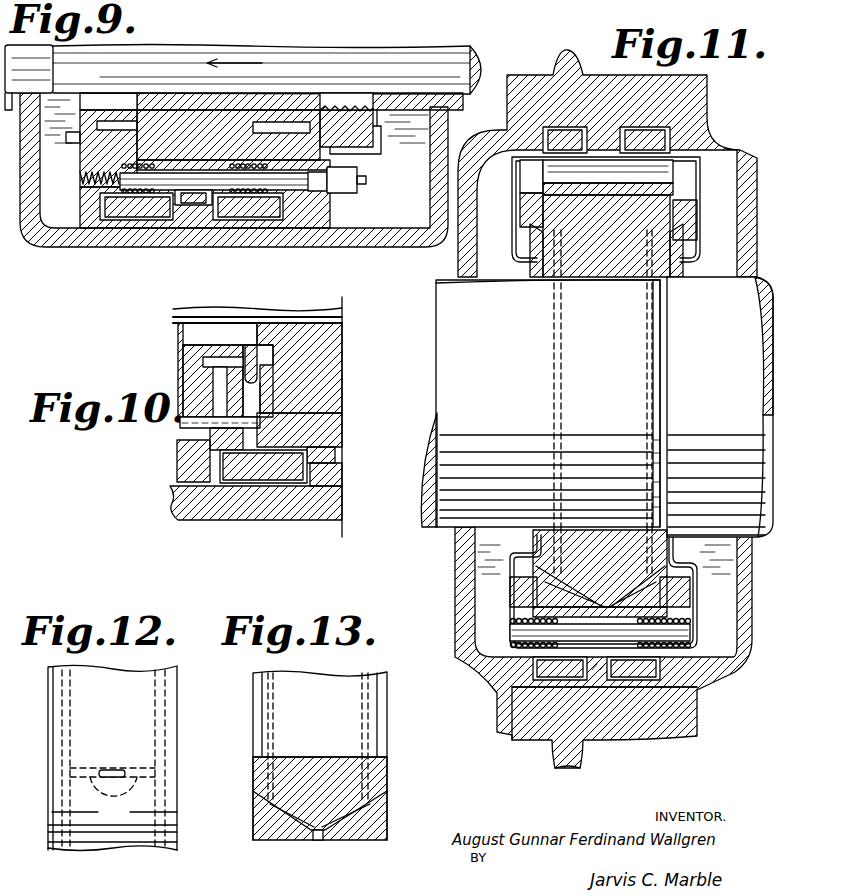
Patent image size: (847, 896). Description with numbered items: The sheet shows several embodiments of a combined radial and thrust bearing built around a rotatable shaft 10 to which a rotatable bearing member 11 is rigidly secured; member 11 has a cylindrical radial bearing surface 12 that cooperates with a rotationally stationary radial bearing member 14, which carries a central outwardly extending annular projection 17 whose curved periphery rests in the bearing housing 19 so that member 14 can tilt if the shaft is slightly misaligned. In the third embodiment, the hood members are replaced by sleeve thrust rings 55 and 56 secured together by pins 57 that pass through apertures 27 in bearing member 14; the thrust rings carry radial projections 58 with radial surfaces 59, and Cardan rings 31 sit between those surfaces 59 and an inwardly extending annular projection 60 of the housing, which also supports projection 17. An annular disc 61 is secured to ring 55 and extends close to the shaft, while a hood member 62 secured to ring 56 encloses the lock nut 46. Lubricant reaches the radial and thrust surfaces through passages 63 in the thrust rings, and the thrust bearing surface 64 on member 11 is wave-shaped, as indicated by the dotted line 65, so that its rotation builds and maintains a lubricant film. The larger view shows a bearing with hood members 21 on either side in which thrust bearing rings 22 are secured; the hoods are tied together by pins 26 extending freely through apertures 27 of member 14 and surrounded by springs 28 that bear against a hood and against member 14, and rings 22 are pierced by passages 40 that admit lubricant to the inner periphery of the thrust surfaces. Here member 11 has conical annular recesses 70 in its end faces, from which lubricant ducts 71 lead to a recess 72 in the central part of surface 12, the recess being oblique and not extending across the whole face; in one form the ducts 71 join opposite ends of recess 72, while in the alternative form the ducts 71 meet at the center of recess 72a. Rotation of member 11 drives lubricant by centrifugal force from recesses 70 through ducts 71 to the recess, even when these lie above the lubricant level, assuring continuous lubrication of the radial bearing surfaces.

In FIG. 10, the rotatable shaft 10 is at (189, 315).
In FIG. 11, the rotatable shaft 10 is at (762, 286).
In FIG. 9, the rotatable bearing member 11 is at (200, 118).
In FIG. 10, the rotatable bearing member 11 is at (334, 370).
In FIG. 11, the rotatable bearing member 11 is at (628, 270).
In FIG. 12, the rotatable bearing member 11 is at (147, 705).
In FIG. 13, the rotatable bearing member 11 is at (377, 777).
In FIG. 11, the cylindrical radial bearing surface 12 is at (607, 193).
In FIG. 9, the radial bearing member 14 is at (217, 162).
In FIG. 10, the radial bearing member 14 is at (337, 433).
In FIG. 11, the radial bearing member 14 is at (672, 184).
In FIG. 9, the annular projection 17 is at (203, 199).
In FIG. 10, the annular projection 17 is at (337, 455).
In FIG. 11, the annular projection 17 is at (603, 128).
In FIG. 11, the bearing housing 19 is at (670, 727).
In FIG. 11, the hood members 21 is at (514, 238).
In FIG. 11, the thrust bearing rings 22 is at (521, 206).
In FIG. 11, the pins 26 is at (690, 633).
In FIG. 9, the apertures 27 is at (168, 171).
In FIG. 11, the apertures 27 is at (543, 174).
In FIG. 11, the springs 28 is at (690, 621).
In FIG. 9, the Cardan rings 31 is at (150, 212).
In FIG. 10, the Cardan rings 31 is at (270, 482).
In FIG. 11, the Cardan rings 31 is at (558, 128).
In FIG. 11, the passages 40 is at (675, 606).
In FIG. 9, the lock nut 46 is at (348, 114).
In FIG. 9, the sleeve thrust ring 55 is at (82, 164).
In FIG. 10, the sleeve thrust ring 55 is at (185, 361).
In FIG. 9, the sleeve thrust ring 56 is at (327, 198).
In FIG. 9, the pins 57 is at (311, 184).
In FIG. 9, the radial projections 58 is at (88, 214).
In FIG. 10, the radial projections 58 is at (180, 476).
In FIG. 9, the radial surfaces 59 is at (100, 207).
In FIG. 10, the radial surfaces 59 is at (215, 485).
In FIG. 9, the annular projection 60 is at (190, 212).
In FIG. 10, the annular projection 60 is at (336, 479).
In FIG. 9, the annular disc 61 is at (86, 102).
In FIG. 10, the annular disc 61 is at (178, 334).
In FIG. 9, the hood member 62 is at (383, 150).
In FIG. 10, the passages 63 is at (186, 388).
In FIG. 10, the thrust bearing surface 64 is at (249, 360).
In FIG. 10, the dotted line 65 is at (262, 395).
In FIG. 11, the annular recesses 70 is at (664, 234).
In FIG. 12, the annular recesses 70 is at (63, 712).
In FIG. 13, the annular recesses 70 is at (262, 795).
In FIG. 11, the lubricant ducts 71 is at (623, 588).
In FIG. 12, the lubricant ducts 71 is at (112, 788).
In FIG. 13, the lubricant ducts 71 is at (295, 818).
In FIG. 11, the recess 72 is at (601, 606).
In FIG. 12, the recess 72 is at (113, 770).
In FIG. 13, the recess 72a is at (318, 832).